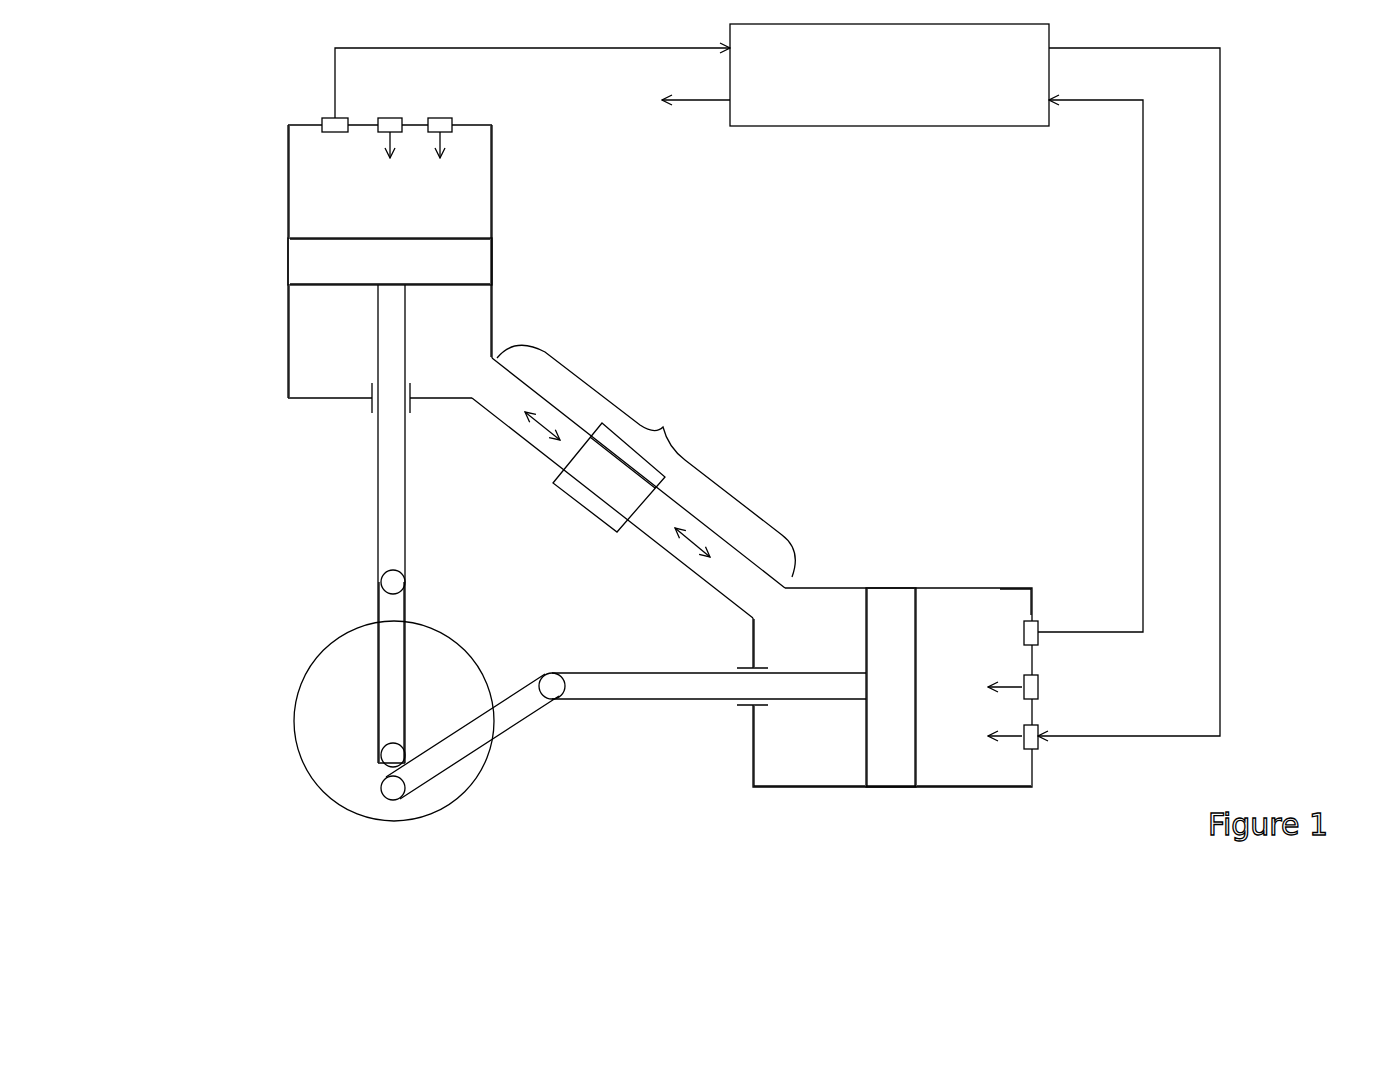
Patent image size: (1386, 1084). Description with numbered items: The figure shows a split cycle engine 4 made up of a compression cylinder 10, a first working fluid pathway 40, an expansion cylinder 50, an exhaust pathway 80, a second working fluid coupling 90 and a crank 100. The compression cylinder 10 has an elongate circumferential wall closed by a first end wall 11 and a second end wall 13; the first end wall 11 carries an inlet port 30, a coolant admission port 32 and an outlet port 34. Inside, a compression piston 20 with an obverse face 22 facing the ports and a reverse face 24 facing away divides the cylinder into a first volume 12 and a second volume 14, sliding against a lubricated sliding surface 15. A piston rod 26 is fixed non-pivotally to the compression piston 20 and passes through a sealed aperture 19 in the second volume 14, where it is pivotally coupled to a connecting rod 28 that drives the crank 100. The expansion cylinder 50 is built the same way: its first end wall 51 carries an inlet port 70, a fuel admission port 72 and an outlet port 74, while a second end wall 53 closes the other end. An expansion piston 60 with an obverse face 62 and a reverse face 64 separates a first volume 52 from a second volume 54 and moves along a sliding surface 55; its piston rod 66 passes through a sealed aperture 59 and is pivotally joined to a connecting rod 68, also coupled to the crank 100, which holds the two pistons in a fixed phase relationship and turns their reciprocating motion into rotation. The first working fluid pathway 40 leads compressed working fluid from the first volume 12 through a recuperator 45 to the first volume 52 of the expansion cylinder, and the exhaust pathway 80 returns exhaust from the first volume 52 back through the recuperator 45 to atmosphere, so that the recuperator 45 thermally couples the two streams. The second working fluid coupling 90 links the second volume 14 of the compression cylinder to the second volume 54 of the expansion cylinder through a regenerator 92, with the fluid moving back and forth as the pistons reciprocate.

The split cycle engine 4 is at (1243, 515).
The compression cylinder 10 is at (283, 238).
The first end wall 11 is at (302, 125).
The first volume 12 is at (336, 178).
The second end wall 13 is at (313, 386).
The second volume 14 is at (310, 328).
The sliding surface 15 is at (288, 285).
The aperture 19 is at (372, 405).
The compression piston 20 is at (390, 261).
The obverse face 22 is at (415, 238).
The reverse face 24 is at (425, 290).
The piston rod 26 is at (391, 491).
The connecting rod 28 is at (392, 610).
The inlet port 30 is at (439, 128).
The coolant admission port 32 is at (396, 128).
The outlet port 34 is at (343, 115).
The first working fluid pathway 40 is at (563, 48).
The recuperator 45 is at (829, 75).
The expansion cylinder 50 is at (920, 790).
The first end wall 51 is at (1032, 606).
The first volume 52 is at (992, 765).
The second end wall 53 is at (752, 758).
The second volume 54 is at (797, 762).
The sliding surface 55 is at (868, 790).
The aperture 59 is at (745, 705).
The expansion piston 60 is at (891, 687).
The obverse face 62 is at (920, 648).
The reverse face 64 is at (862, 645).
The piston rod 66 is at (668, 690).
The connecting rod 68 is at (521, 701).
The inlet port 70 is at (1038, 747).
The fuel admission port 72 is at (1038, 690).
The outlet port 74 is at (1038, 645).
The exhaust pathway 80 is at (1142, 398).
The second working fluid coupling 90 is at (633, 481).
The regenerator 92 is at (591, 516).
The crank 100 is at (326, 780).